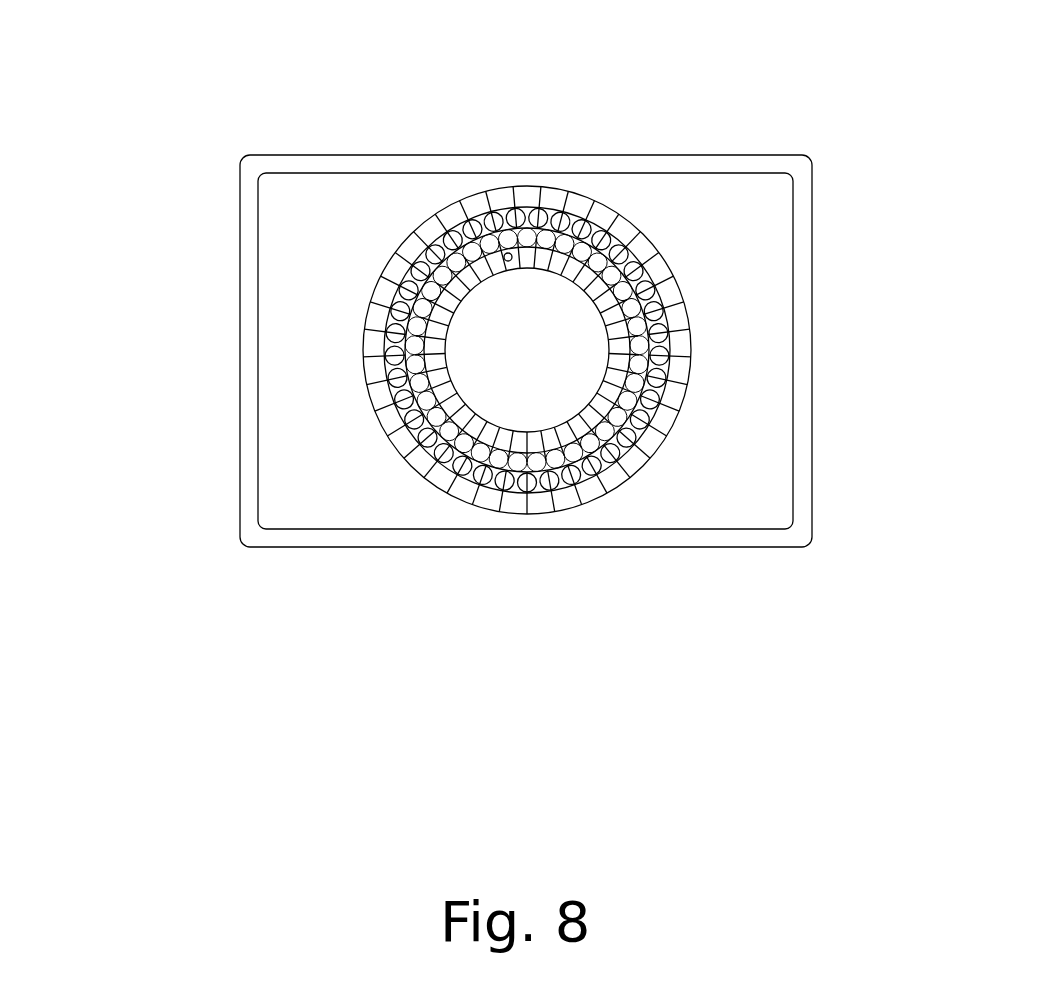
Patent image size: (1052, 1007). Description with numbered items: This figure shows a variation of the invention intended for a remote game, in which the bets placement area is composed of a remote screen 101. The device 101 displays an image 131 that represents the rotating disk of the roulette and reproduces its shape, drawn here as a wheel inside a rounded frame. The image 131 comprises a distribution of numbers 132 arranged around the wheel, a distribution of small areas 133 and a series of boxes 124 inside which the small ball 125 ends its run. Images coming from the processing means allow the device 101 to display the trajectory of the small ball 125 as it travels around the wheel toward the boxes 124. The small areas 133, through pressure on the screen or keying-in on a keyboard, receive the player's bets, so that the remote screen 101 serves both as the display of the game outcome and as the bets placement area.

The remote screen 101 is at (198, 145).
The boxes 124 is at (457, 287).
The small ball 125 is at (585, 210).
The image 131 is at (683, 233).
The distribution of numbers 132 is at (372, 344).
The small areas 133 is at (432, 228).